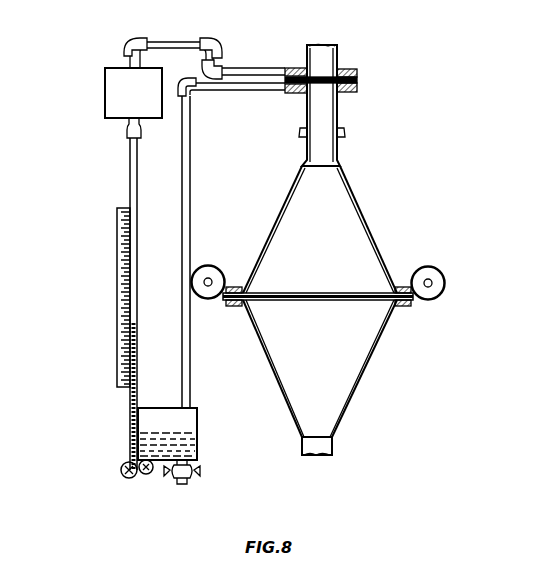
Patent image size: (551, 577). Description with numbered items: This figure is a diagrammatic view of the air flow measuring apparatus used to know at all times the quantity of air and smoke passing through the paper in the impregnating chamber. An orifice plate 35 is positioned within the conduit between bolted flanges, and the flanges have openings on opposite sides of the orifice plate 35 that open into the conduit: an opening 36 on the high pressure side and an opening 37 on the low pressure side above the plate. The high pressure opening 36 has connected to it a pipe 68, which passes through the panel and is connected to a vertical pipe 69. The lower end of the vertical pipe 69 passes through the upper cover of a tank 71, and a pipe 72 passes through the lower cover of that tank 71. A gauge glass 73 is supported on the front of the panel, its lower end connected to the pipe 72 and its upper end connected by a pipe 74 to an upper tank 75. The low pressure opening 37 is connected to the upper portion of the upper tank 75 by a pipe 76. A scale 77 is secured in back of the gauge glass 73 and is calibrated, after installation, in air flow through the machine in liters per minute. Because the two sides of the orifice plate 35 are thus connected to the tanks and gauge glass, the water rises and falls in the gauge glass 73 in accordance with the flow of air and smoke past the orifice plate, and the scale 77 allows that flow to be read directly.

The orifice plate 35 is at (316, 79).
The opening 36 is at (315, 86).
The opening 37 is at (313, 74).
The pipe 68 is at (218, 90).
The vertical pipe 69 is at (190, 235).
The tank 71 is at (163, 434).
The pipe 72 is at (133, 478).
The gauge glass 73 is at (140, 334).
The pipe 74 is at (130, 122).
The upper tank 75 is at (164, 71).
The pipe 76 is at (155, 44).
The scale 77 is at (122, 300).